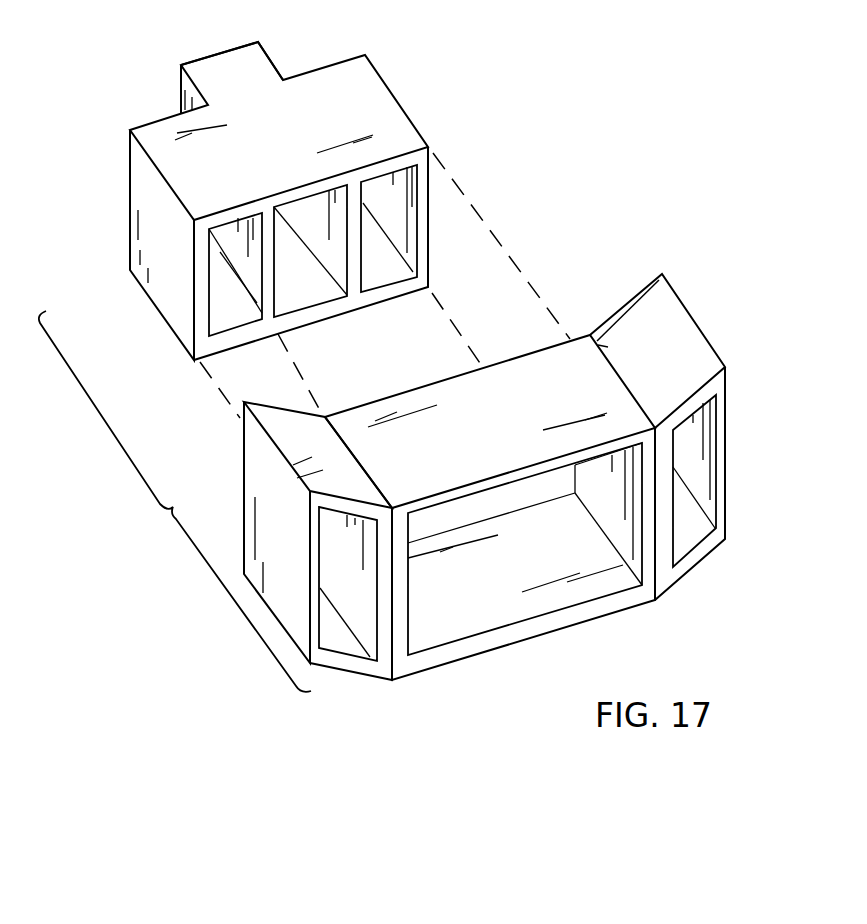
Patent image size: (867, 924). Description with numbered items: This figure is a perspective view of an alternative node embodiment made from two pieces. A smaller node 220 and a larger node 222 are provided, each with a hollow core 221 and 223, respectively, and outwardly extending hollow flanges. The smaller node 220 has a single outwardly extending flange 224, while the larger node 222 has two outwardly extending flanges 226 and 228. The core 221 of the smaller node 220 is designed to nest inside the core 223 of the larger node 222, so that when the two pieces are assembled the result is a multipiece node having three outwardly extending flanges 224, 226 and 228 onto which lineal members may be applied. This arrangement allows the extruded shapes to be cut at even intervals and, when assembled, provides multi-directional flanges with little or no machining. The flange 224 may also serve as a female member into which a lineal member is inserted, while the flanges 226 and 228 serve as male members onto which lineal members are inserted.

The smaller node 220 is at (322, 184).
The hollow core of smaller node 221 is at (305, 300).
The larger node 222 is at (482, 490).
The hollow core of larger node 223 is at (502, 622).
The flange 224 is at (272, 47).
The flange 226 is at (243, 450).
The flange 228 is at (727, 432).